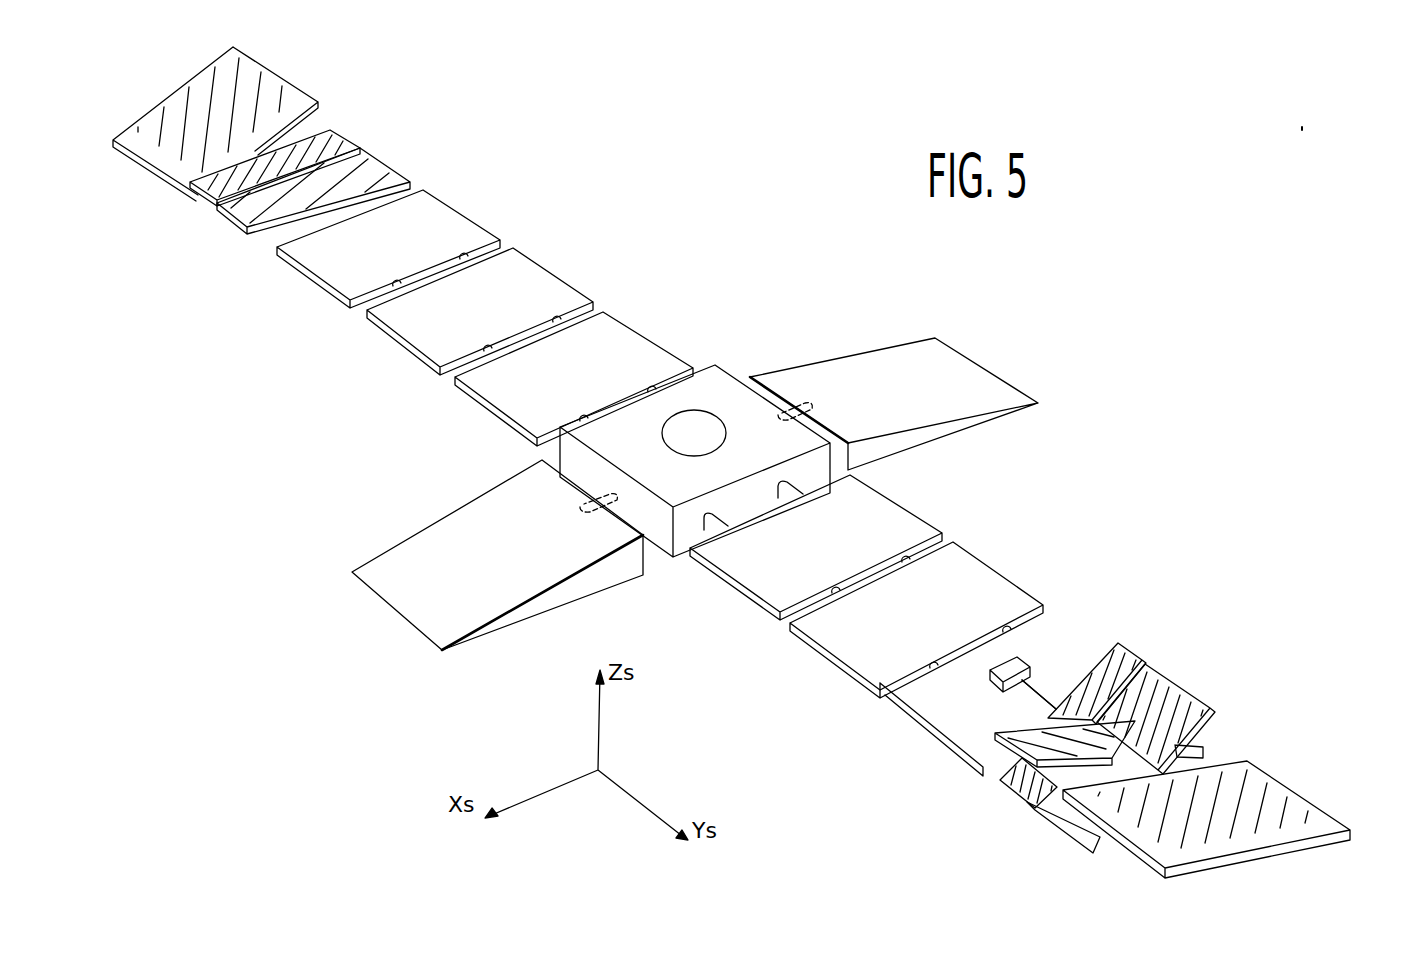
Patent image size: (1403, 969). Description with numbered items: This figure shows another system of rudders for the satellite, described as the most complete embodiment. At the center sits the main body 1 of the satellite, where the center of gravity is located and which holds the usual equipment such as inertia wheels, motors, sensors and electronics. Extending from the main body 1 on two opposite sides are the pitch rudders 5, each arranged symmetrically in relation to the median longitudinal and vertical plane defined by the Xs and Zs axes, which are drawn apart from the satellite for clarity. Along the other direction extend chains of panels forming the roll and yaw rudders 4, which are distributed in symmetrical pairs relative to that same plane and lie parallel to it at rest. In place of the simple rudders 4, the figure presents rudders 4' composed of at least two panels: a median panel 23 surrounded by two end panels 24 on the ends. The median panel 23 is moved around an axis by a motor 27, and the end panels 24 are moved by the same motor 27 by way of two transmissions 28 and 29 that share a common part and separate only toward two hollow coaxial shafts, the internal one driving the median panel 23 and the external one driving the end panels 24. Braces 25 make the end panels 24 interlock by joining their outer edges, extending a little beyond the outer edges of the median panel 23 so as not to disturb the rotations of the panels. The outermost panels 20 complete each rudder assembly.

The main body 1 is at (708, 384).
The roll and yaw rudders 4 is at (602, 528).
The rudders composed of at least two panels 4' is at (602, 532).
The pitch rudders 5 is at (435, 546).
The outer solar panel 20 is at (276, 90).
The median panel 23 is at (380, 163).
The end panels 24 is at (340, 140).
The braces 25 is at (1165, 668).
The motor 27 is at (1027, 658).
The transmission 28 is at (1003, 690).
The transmission 29 is at (1003, 690).